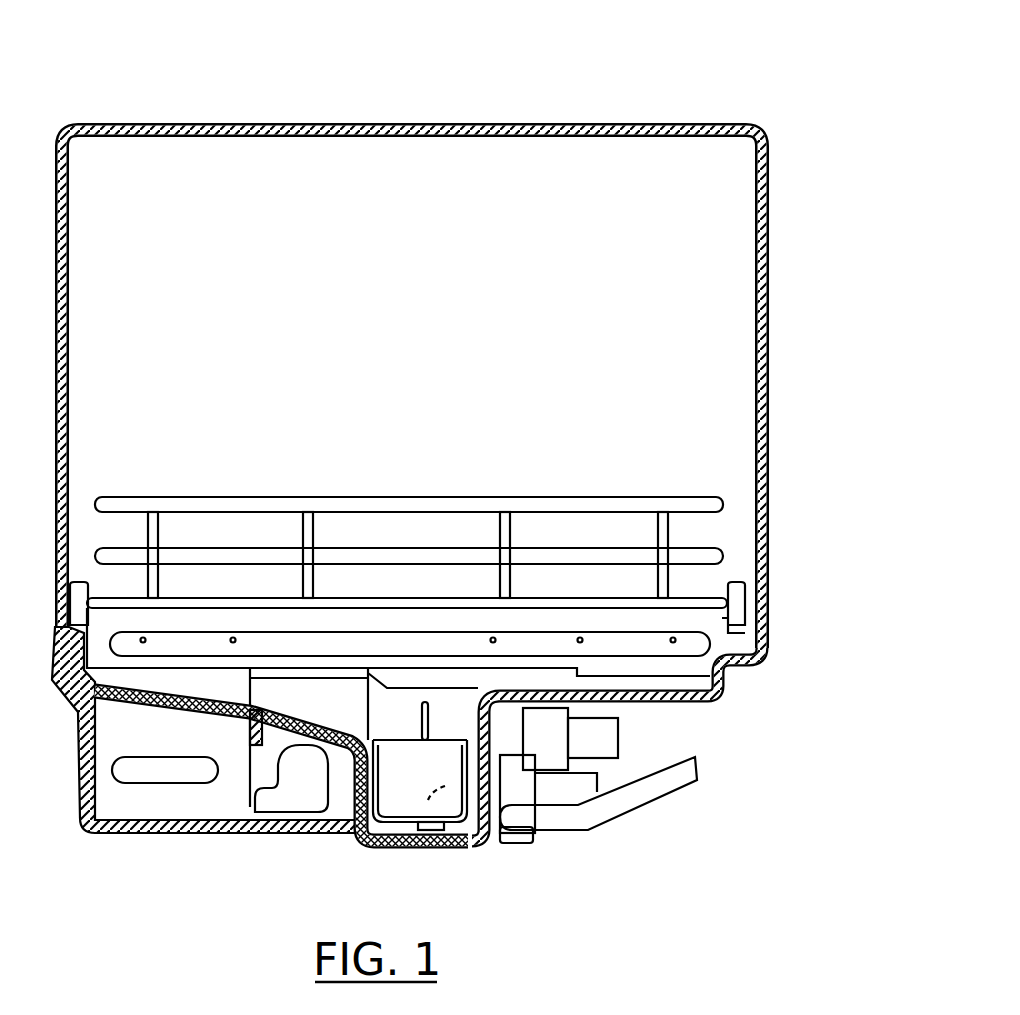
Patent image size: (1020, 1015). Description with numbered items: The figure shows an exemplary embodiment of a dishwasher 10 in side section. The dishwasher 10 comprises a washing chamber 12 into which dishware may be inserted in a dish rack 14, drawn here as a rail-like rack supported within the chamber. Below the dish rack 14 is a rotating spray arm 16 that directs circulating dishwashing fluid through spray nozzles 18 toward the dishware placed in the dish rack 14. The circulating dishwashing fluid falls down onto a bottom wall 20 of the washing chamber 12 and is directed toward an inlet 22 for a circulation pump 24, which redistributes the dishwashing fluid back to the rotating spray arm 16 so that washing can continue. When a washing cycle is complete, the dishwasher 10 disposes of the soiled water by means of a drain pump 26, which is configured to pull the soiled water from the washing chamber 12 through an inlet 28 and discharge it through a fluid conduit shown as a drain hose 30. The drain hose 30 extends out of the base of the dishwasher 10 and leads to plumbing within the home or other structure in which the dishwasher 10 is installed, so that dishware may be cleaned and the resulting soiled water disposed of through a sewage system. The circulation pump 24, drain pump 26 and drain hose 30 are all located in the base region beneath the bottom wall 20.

The dishwasher 10 is at (602, 47).
The washing chamber 12 is at (652, 343).
The dish rack 14 is at (353, 500).
The rotating spray arm 16 is at (532, 633).
The spray nozzles 18 is at (325, 632).
The bottom wall 20 is at (680, 695).
The inlet 22 is at (293, 787).
The circulation pump 24 is at (602, 740).
The drain pump 26 is at (528, 842).
The inlet 28 is at (440, 842).
The drain hose 30 is at (637, 788).